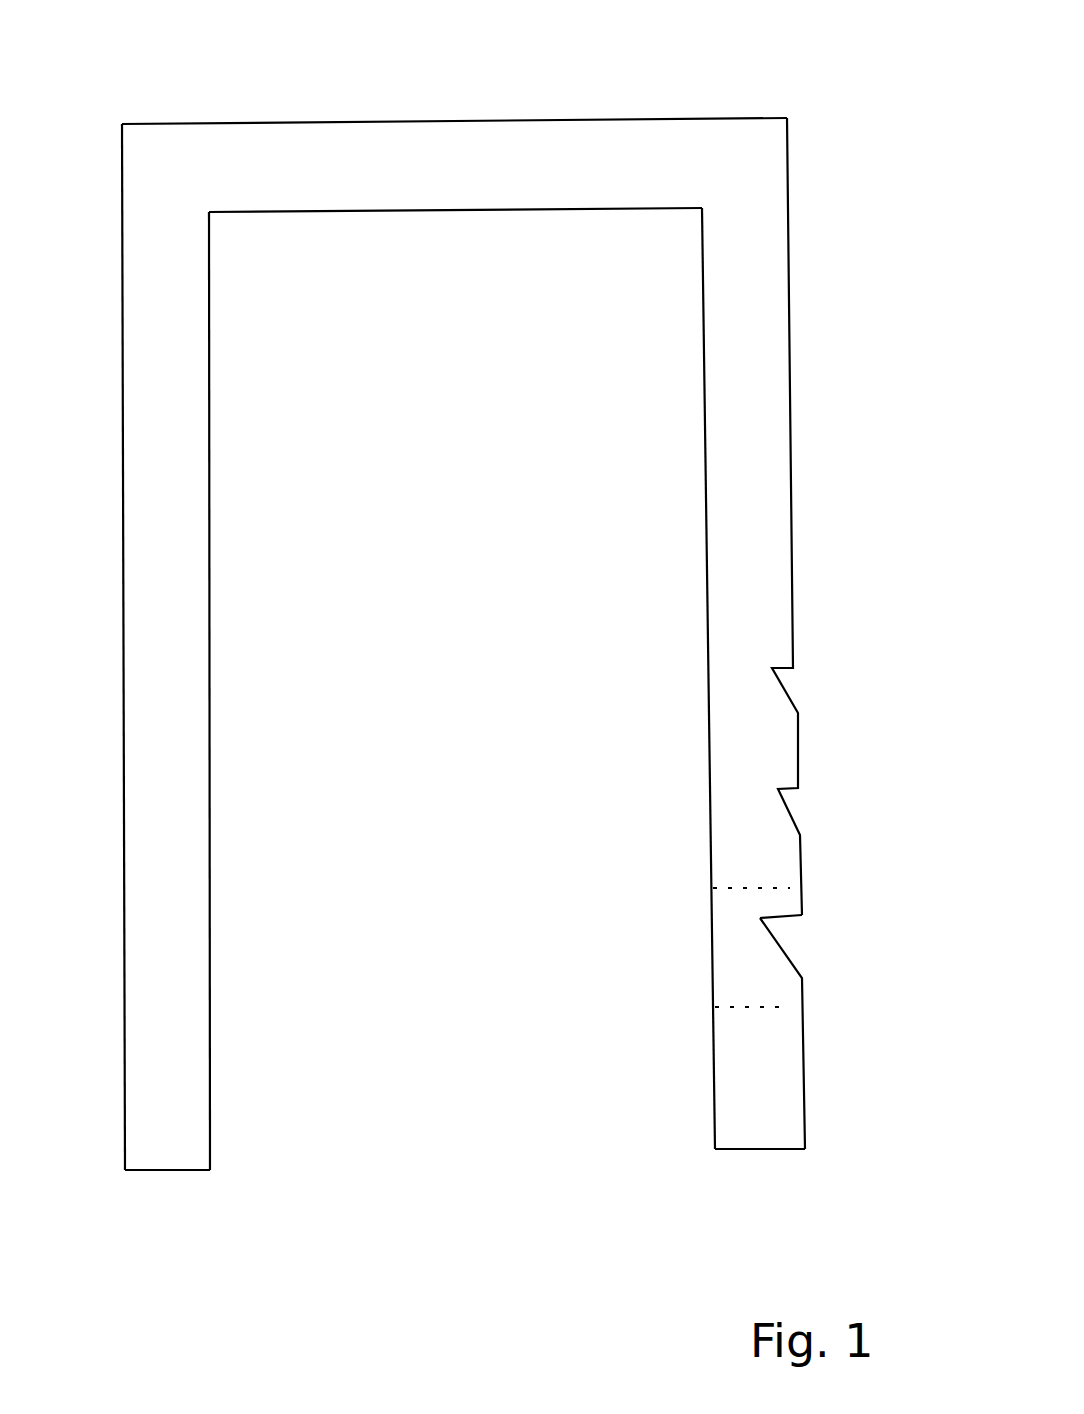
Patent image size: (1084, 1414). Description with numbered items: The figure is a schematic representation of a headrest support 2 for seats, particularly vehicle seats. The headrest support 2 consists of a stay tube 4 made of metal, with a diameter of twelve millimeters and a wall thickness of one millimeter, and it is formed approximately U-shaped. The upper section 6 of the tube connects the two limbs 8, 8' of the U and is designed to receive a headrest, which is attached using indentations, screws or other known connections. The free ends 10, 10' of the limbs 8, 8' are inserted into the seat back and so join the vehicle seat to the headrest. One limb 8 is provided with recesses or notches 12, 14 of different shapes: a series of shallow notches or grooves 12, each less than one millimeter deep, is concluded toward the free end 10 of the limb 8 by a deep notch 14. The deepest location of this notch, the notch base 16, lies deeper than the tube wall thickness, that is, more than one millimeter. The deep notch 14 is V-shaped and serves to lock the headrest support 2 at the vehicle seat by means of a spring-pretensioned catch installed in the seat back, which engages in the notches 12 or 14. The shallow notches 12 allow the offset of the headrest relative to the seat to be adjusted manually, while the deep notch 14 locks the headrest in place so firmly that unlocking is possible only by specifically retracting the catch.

The headrest support 2 is at (286, 88).
The stay tube 4 is at (617, 208).
The section 6 is at (472, 119).
The limb 8 is at (665, 678).
The limb 8' is at (267, 691).
The free end 10 is at (760, 1197).
The free end 10' is at (134, 1210).
The shallow notches 12 is at (787, 688).
The deep notch 14 is at (790, 958).
The notch base 16 is at (760, 918).